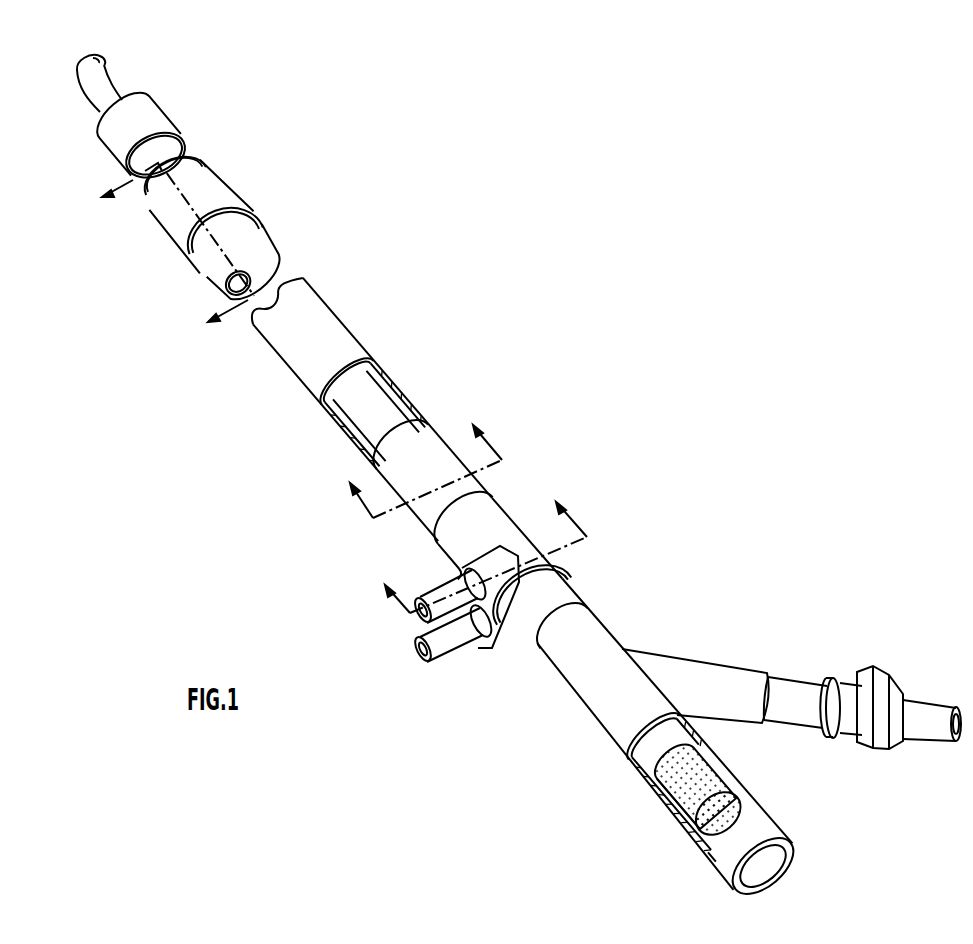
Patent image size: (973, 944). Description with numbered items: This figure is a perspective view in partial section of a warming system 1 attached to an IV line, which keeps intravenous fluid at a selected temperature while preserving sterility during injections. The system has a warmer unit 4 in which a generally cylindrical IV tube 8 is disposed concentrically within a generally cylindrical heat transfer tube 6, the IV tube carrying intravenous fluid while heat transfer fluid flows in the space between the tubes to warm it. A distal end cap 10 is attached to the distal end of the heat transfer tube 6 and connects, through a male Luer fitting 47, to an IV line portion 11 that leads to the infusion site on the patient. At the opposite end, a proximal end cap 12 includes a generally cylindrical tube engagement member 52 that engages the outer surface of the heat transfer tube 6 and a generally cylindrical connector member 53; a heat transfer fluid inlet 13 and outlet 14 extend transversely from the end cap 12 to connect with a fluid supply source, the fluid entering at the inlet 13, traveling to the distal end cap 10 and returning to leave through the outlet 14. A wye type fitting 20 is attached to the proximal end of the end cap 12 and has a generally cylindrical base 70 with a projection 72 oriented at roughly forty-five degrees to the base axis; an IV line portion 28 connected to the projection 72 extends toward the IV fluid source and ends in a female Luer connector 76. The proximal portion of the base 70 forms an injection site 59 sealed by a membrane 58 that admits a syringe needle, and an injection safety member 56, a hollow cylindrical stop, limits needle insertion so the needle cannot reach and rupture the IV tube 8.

The warming system 1 is at (575, 362).
The warmer unit 4 is at (288, 443).
The heat transfer tube 6 is at (285, 350).
The IV tube 8 is at (373, 405).
The distal end cap 10 is at (237, 138).
The IV line portion 11 is at (120, 92).
The proximal end cap 12 is at (497, 501).
The heat transfer fluid inlet 13 is at (448, 645).
The heat transfer fluid outlet 14 is at (437, 596).
The wye type fitting 20 is at (652, 624).
The IV line portion 28 is at (785, 693).
The male Luer fitting 47 is at (158, 114).
The tube engagement member 52 is at (513, 525).
The connector member 53 is at (565, 605).
The injection safety member 56 is at (710, 856).
The membrane 58 is at (705, 782).
The injection site 59 is at (679, 835).
The base 70 is at (600, 708).
The projection 72 is at (695, 655).
The female Luer connector 76 is at (918, 708).